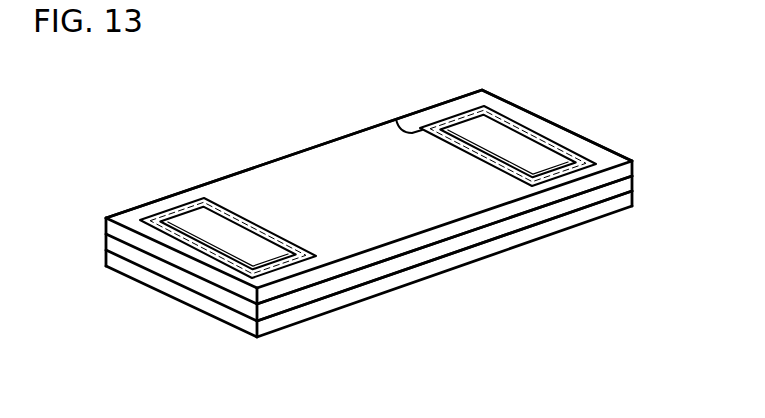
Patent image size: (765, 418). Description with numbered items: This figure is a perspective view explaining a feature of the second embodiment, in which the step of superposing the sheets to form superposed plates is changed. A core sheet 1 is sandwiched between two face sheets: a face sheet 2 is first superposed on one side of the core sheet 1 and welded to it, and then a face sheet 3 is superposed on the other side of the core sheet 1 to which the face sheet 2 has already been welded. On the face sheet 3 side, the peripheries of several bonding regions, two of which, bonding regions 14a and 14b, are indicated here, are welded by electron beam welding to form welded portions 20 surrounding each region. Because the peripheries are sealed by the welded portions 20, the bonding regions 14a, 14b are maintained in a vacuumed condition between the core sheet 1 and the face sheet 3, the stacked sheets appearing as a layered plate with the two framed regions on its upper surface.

The core sheet 1 is at (198, 287).
The face sheet 2 is at (322, 310).
The face sheet 3 is at (282, 175).
The bonding region 14a is at (212, 220).
The bonding region 14b is at (457, 130).
The electron beam welded portion 20 is at (173, 210).